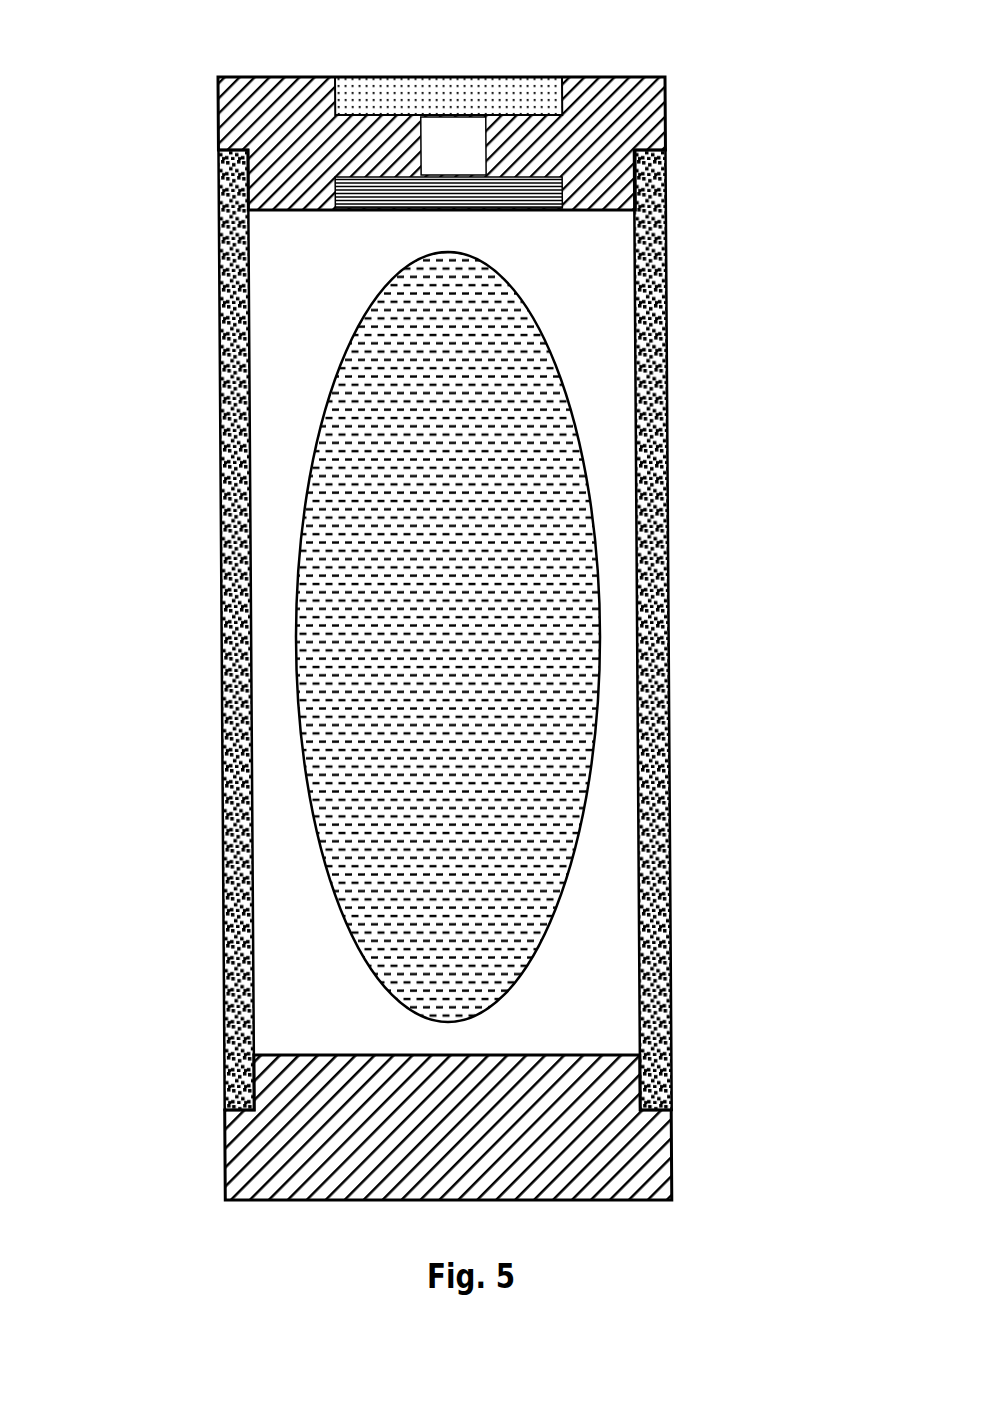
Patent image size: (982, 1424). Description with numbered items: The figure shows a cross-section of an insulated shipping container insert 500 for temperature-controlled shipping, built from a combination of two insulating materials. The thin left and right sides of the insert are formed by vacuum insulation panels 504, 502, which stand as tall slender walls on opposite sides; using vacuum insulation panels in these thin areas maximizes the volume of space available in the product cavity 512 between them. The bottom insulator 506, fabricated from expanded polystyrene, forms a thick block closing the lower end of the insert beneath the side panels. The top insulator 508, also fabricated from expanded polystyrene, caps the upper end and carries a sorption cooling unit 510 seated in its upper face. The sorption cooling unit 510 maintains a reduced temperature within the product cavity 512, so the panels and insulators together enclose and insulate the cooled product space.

The insulated shipping container insert 500 is at (439, 600).
The vacuum insulation panel 502 is at (670, 557).
The vacuum insulation panel 504 is at (220, 555).
The bottom insulator 506 is at (670, 1143).
The top insulator 508 is at (665, 113).
The sorption cooling unit 510 is at (470, 71).
The product cavity 512 is at (592, 278).